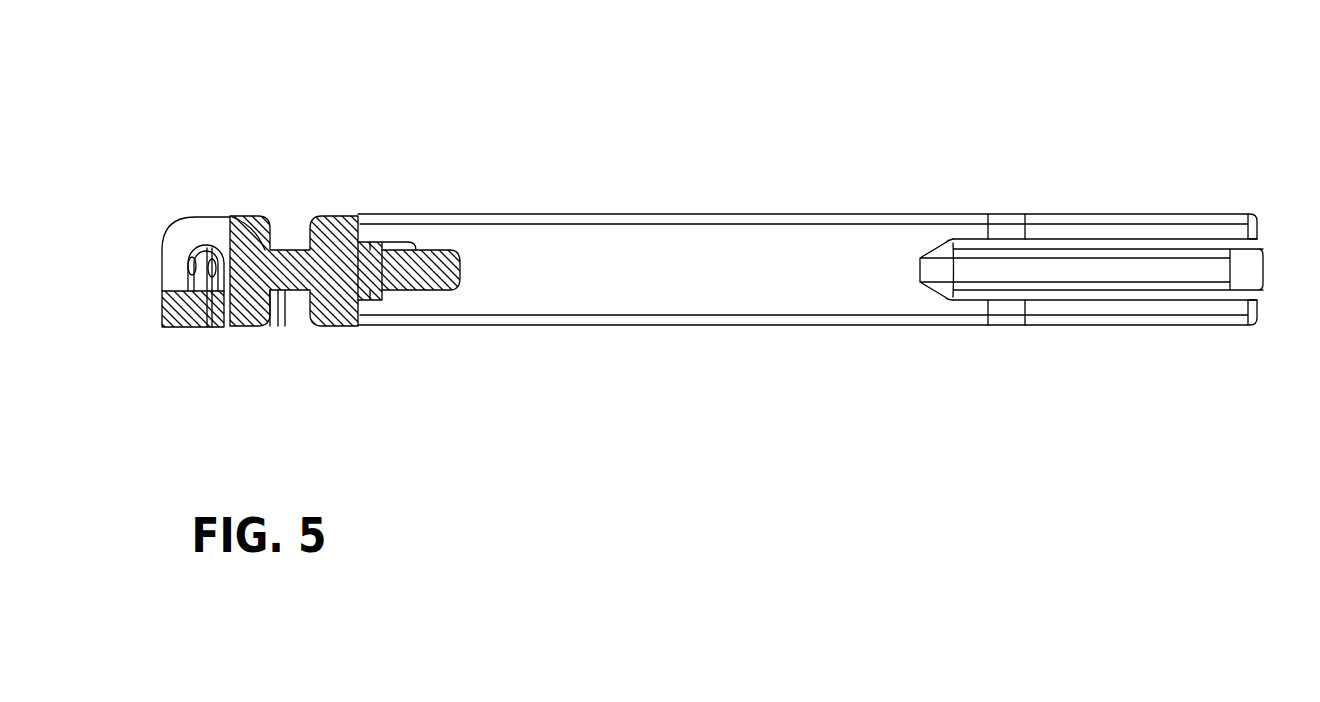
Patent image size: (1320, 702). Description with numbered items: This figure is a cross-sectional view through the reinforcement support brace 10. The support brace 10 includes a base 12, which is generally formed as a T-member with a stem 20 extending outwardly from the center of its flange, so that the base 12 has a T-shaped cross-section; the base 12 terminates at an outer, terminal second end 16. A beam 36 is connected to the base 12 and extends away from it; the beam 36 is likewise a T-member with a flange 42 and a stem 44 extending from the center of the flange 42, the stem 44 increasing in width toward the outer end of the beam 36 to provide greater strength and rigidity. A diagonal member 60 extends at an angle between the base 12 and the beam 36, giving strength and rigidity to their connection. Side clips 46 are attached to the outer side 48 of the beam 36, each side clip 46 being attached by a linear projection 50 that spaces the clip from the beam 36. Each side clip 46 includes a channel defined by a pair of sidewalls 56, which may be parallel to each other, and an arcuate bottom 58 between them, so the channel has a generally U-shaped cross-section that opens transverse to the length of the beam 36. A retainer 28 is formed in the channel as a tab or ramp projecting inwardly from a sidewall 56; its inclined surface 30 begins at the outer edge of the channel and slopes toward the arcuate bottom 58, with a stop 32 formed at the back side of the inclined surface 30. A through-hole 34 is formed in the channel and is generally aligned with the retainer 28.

The support brace 10 is at (829, 132).
The base 12 is at (1134, 292).
The second end 16 is at (1264, 264).
The stem 20 is at (1098, 236).
The retainer 28 is at (172, 328).
The inclined surface 30 is at (200, 323).
The stop 32 is at (218, 323).
The through-hole 34 is at (160, 270).
The beam 36 is at (348, 210).
The flange 42 is at (377, 300).
The stem 44 is at (406, 292).
The side clip 46 is at (195, 213).
The outer side 48 is at (305, 300).
The linear projection 50 is at (300, 250).
The sidewall 56 is at (185, 218).
The arcuate bottom 58 is at (205, 248).
The diagonal member 60 is at (683, 213).